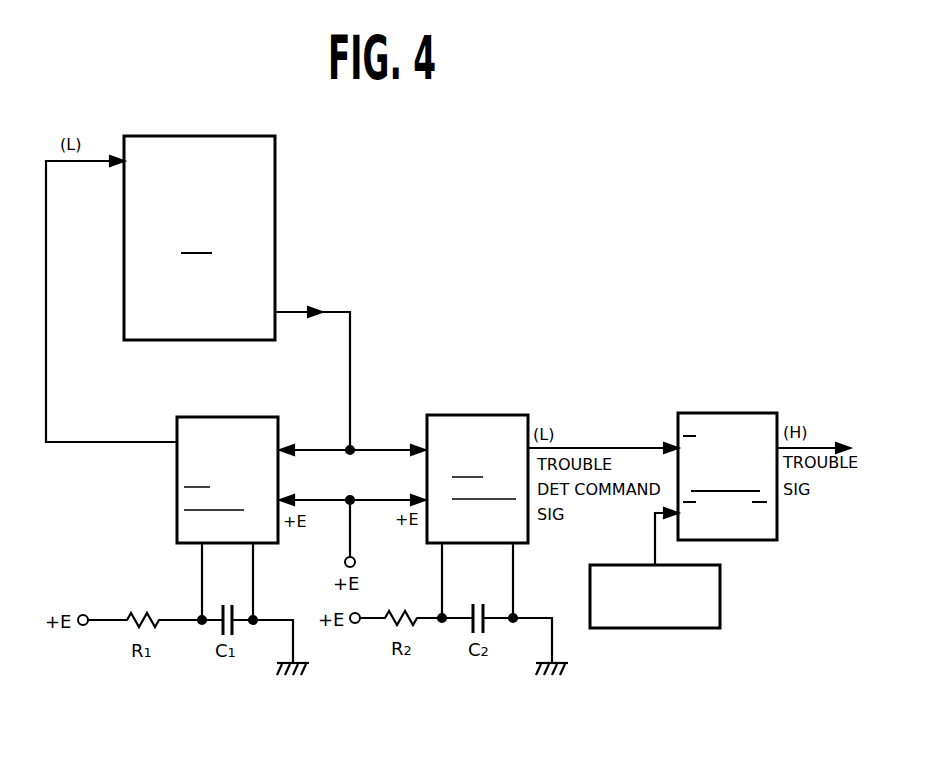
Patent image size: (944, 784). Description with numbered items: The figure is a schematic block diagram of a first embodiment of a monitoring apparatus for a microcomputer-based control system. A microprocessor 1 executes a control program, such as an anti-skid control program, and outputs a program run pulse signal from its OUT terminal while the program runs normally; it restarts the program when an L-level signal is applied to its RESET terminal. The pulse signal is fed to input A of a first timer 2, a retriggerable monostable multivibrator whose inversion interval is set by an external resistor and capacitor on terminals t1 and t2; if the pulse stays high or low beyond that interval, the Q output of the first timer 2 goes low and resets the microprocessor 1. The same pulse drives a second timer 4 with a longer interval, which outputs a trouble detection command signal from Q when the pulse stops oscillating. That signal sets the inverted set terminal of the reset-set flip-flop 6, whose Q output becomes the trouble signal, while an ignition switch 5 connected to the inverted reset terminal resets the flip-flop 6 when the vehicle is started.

The microprocessor 1 is at (246, 136).
The first timer 2 is at (264, 417).
The second timer 4 is at (495, 415).
The ignition switch 5 is at (720, 590).
The reset-set flip-flop 6 is at (752, 413).